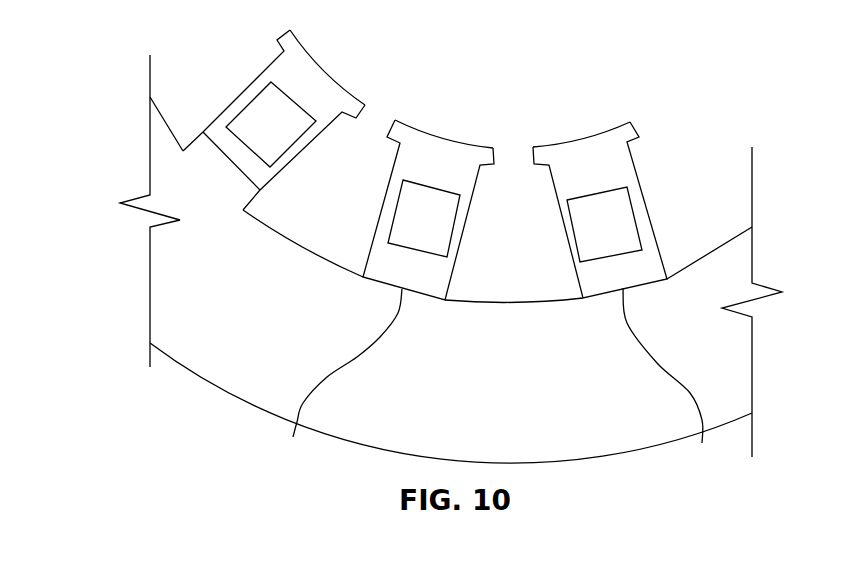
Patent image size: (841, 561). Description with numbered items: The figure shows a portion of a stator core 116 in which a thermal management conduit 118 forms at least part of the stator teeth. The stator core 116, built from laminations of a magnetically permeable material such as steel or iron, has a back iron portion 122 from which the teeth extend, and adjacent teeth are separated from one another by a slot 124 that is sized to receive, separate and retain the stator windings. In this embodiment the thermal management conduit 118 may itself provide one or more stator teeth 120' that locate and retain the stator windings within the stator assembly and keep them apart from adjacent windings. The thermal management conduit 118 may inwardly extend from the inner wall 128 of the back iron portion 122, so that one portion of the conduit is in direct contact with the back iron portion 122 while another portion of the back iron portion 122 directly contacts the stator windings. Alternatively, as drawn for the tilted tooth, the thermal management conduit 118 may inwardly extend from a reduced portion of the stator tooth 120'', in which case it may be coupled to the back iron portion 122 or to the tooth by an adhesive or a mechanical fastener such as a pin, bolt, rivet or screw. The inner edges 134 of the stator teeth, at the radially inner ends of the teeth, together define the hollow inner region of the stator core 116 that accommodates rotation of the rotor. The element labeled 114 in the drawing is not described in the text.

The permanent magnet 114 is at (253, 137).
The stator core 116 is at (623, 450).
The thermal management conduit 118 is at (426, 164).
The stator teeth 120' is at (577, 173).
The stator tooth 120'' is at (213, 120).
The back iron portion 122 is at (210, 370).
The slot 124 is at (312, 202).
The inner wall 128 is at (498, 379).
The inner edges 134 is at (327, 70).